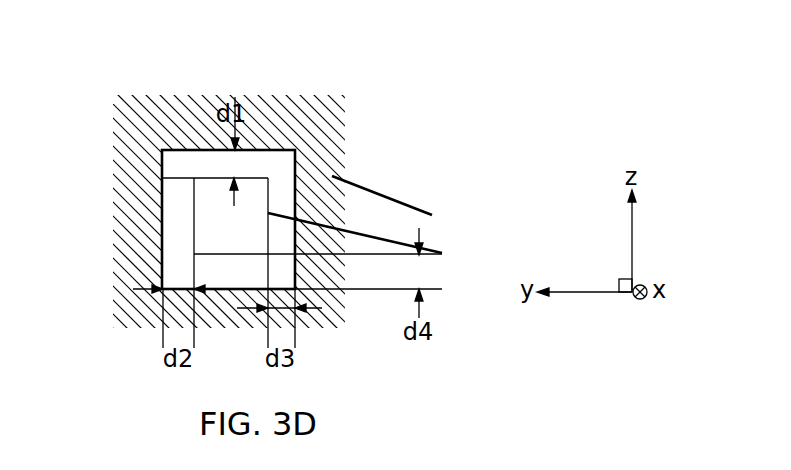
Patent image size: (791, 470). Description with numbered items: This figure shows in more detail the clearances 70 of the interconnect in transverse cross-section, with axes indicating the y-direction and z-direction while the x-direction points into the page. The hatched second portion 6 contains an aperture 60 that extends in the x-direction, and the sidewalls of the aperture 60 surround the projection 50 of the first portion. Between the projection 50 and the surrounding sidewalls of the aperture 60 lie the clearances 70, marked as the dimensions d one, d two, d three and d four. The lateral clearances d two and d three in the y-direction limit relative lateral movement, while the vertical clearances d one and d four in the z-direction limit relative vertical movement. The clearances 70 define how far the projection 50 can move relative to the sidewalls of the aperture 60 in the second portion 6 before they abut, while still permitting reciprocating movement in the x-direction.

The second portion 6 is at (335, 135).
The aperture 60 is at (277, 157).
The clearances 70 is at (220, 158).
The projection 50 is at (231, 208).